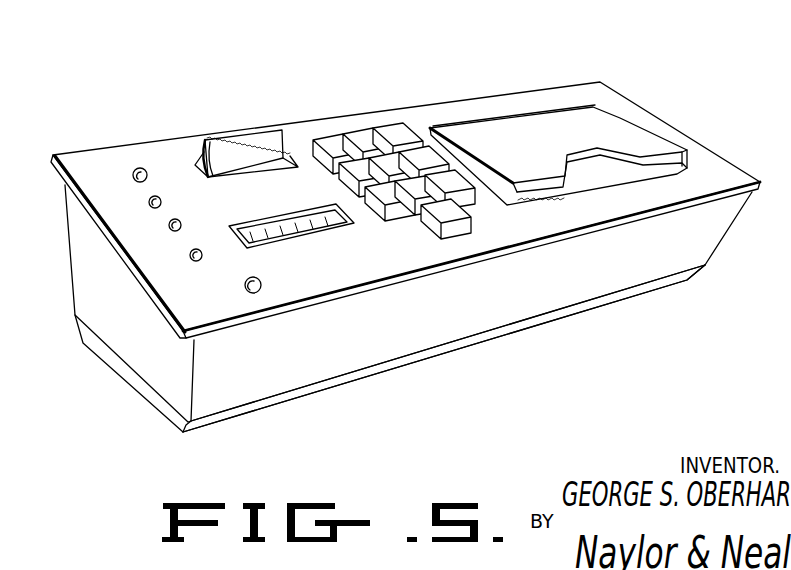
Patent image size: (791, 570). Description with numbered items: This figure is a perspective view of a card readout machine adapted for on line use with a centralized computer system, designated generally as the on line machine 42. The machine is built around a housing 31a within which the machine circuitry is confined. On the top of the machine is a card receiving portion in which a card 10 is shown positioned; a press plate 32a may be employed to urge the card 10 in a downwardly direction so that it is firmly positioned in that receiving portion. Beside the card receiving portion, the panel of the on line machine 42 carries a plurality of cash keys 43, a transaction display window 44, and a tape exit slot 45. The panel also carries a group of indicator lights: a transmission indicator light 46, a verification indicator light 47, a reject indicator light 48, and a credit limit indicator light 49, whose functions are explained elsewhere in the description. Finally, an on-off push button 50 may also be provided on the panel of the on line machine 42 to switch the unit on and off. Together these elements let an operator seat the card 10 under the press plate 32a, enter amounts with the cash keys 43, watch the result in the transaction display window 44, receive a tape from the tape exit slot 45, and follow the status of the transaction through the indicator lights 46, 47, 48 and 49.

The card 10 is at (668, 165).
The on line readout machine 42 is at (644, 107).
The housing 31a is at (537, 307).
The press plate 32a is at (528, 166).
The cash keys 43 is at (369, 130).
The transaction display window 44 is at (281, 225).
The tape exit slot 45 is at (283, 158).
The transmission indicator light 46 is at (142, 168).
The verification indicator light 47 is at (150, 206).
The reject indicator light 48 is at (181, 223).
The credit limit indicator light 49 is at (198, 261).
The on-off push button 50 is at (261, 282).